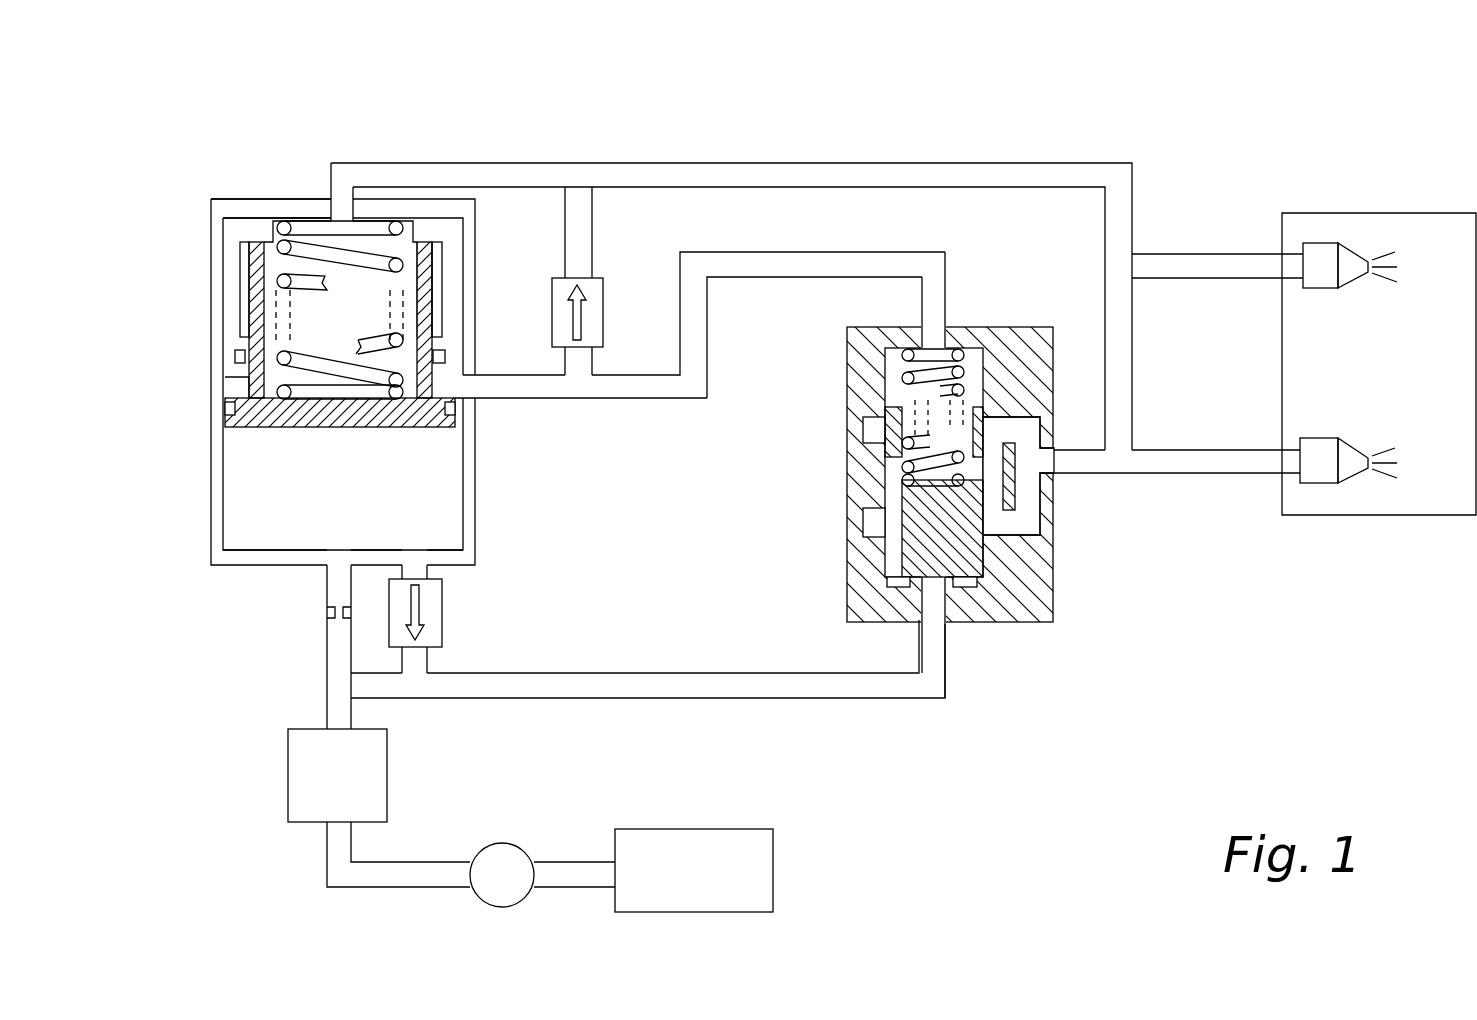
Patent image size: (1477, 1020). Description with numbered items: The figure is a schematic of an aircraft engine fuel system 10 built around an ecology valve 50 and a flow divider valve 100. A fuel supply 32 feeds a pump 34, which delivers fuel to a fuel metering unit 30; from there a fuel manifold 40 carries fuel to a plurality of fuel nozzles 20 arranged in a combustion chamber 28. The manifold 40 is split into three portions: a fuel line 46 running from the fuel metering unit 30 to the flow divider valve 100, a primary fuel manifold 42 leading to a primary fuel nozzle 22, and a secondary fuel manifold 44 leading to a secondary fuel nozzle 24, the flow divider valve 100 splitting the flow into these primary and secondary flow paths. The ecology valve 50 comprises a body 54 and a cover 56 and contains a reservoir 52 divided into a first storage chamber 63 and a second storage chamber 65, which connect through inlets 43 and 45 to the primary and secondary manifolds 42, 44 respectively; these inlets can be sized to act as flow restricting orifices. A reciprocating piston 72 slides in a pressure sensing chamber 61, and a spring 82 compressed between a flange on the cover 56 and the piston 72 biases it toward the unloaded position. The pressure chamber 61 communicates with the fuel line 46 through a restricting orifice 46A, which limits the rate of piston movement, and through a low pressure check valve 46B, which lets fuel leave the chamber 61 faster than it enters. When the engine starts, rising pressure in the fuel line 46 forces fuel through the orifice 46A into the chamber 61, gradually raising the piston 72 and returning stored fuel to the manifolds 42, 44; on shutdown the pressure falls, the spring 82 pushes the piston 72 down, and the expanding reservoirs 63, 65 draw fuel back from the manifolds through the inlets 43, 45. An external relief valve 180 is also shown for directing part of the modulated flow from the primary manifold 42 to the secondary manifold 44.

The fuel system 10 is at (330, 330).
The fuel nozzles 20 is at (1397, 238).
The primary fuel nozzle 22 is at (1358, 290).
The secondary fuel nozzle 24 is at (1358, 440).
The combustion chamber 28 is at (1359, 205).
The fuel metering unit 30 is at (298, 722).
The fuel supply 32 is at (773, 843).
The pump 34 is at (508, 842).
The fuel manifold 40 is at (994, 118).
The primary fuel manifold 42 is at (1158, 250).
The inlet 43 is at (465, 386).
The secondary fuel manifold 44 is at (1158, 473).
The inlet 45 is at (342, 205).
The fuel line 46 is at (535, 688).
The restricting orifice 46A is at (328, 607).
The low pressure check valve 46B is at (442, 598).
The ecology valve 50 is at (219, 170).
The reservoir 52 is at (305, 322).
The body 54 is at (217, 258).
The cover 56 is at (243, 208).
The pressure sensing chamber 61 is at (413, 507).
The reservoir 63 is at (227, 412).
The reservoir 65 is at (385, 306).
The reciprocating piston 72 is at (343, 428).
The spring 82 is at (413, 265).
The flow divider valve 100 is at (1023, 630).
The external relief valve 180 is at (603, 308).